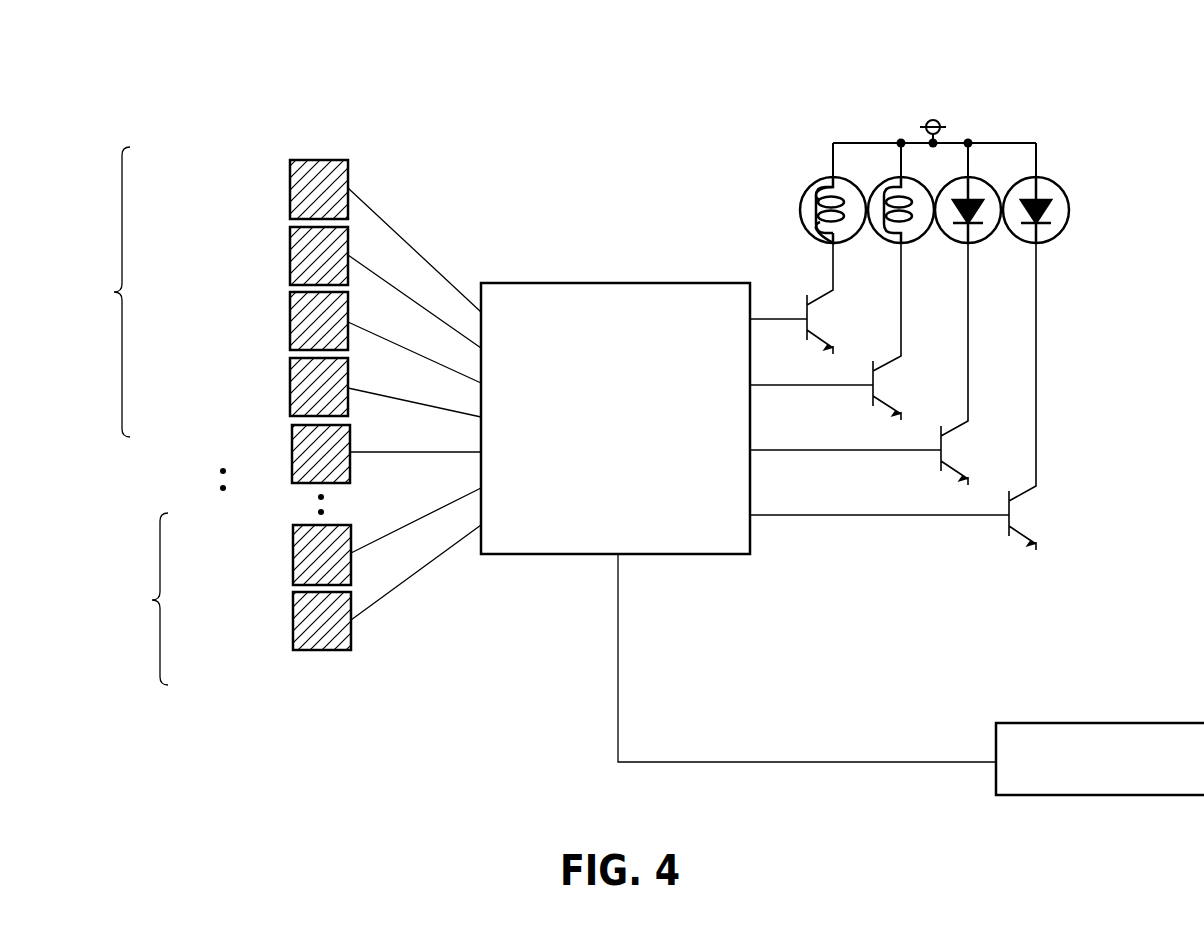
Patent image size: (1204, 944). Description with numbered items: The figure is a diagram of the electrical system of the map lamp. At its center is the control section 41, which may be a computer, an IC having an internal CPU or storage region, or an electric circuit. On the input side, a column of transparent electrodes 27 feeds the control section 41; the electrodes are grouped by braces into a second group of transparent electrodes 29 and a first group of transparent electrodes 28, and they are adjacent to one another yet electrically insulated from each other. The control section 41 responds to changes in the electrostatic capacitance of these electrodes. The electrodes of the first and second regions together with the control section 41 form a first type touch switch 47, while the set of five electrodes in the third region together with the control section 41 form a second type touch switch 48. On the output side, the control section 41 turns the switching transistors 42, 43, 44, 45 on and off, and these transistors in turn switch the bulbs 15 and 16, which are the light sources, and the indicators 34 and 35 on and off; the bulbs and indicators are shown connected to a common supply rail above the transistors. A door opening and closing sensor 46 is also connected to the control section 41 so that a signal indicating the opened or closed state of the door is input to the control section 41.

The bulb 15 is at (801, 212).
The bulb 16 is at (880, 183).
The transparent electrode 27 is at (290, 180).
The first group of transparent electrodes 28 is at (139, 599).
The second group of transparent electrodes 29 is at (102, 292).
The indicator 34 is at (978, 180).
The indicator 35 is at (1068, 207).
The control section 41 is at (562, 283).
The switching transistor 42 is at (807, 302).
The switching transistor 43 is at (872, 400).
The switching transistor 44 is at (940, 467).
The switching transistor 45 is at (1008, 533).
The door opening and closing sensor 46 is at (1084, 723).
The first type touch switch 47 is at (474, 659).
The second type touch switch 48 is at (602, 182).